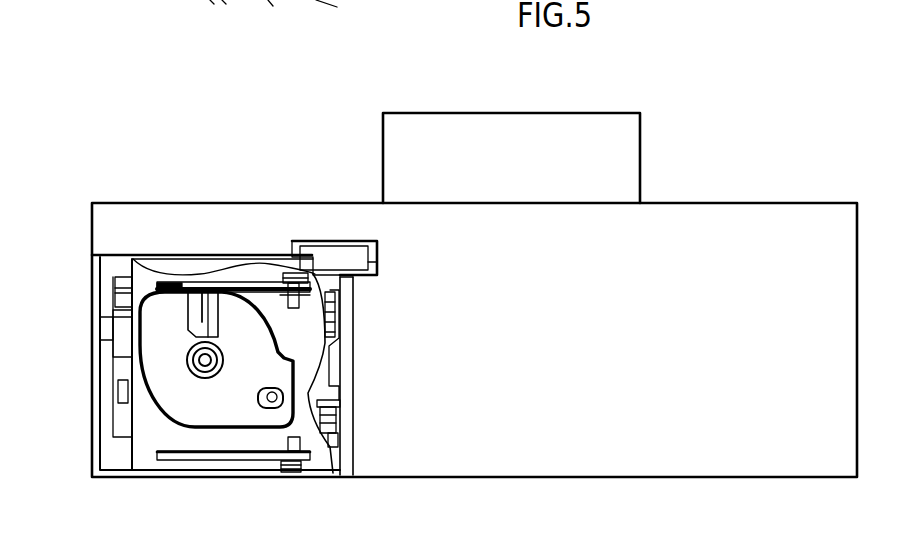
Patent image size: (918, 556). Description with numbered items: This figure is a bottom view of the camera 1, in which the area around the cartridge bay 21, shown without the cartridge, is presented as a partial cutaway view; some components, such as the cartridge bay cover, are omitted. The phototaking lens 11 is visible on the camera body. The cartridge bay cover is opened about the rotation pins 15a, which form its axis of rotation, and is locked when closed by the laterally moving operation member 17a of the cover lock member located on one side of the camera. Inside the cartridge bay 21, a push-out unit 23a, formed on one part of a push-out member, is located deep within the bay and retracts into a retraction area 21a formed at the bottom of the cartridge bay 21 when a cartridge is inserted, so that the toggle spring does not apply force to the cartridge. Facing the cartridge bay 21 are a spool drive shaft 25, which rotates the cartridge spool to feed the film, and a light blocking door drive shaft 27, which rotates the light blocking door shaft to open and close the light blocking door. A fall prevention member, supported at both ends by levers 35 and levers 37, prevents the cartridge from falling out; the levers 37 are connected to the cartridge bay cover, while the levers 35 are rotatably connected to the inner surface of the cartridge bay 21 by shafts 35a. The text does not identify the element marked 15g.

The camera 1 is at (740, 458).
The phototaking lens 11 is at (623, 143).
The rotation pins 15a is at (334, 297).
The portion of frame 15g is at (350, 13).
The operation member 17a is at (105, 328).
The cartridge bay 21 is at (217, 412).
The retraction area 21a is at (192, 320).
The push-out unit 23a is at (207, 317).
The spool drive shaft 25 is at (198, 373).
The light blocking door drive shaft 27 is at (272, 403).
The levers 35 is at (260, 285).
The shafts 35a is at (303, 477).
The levers 37 is at (274, 21).